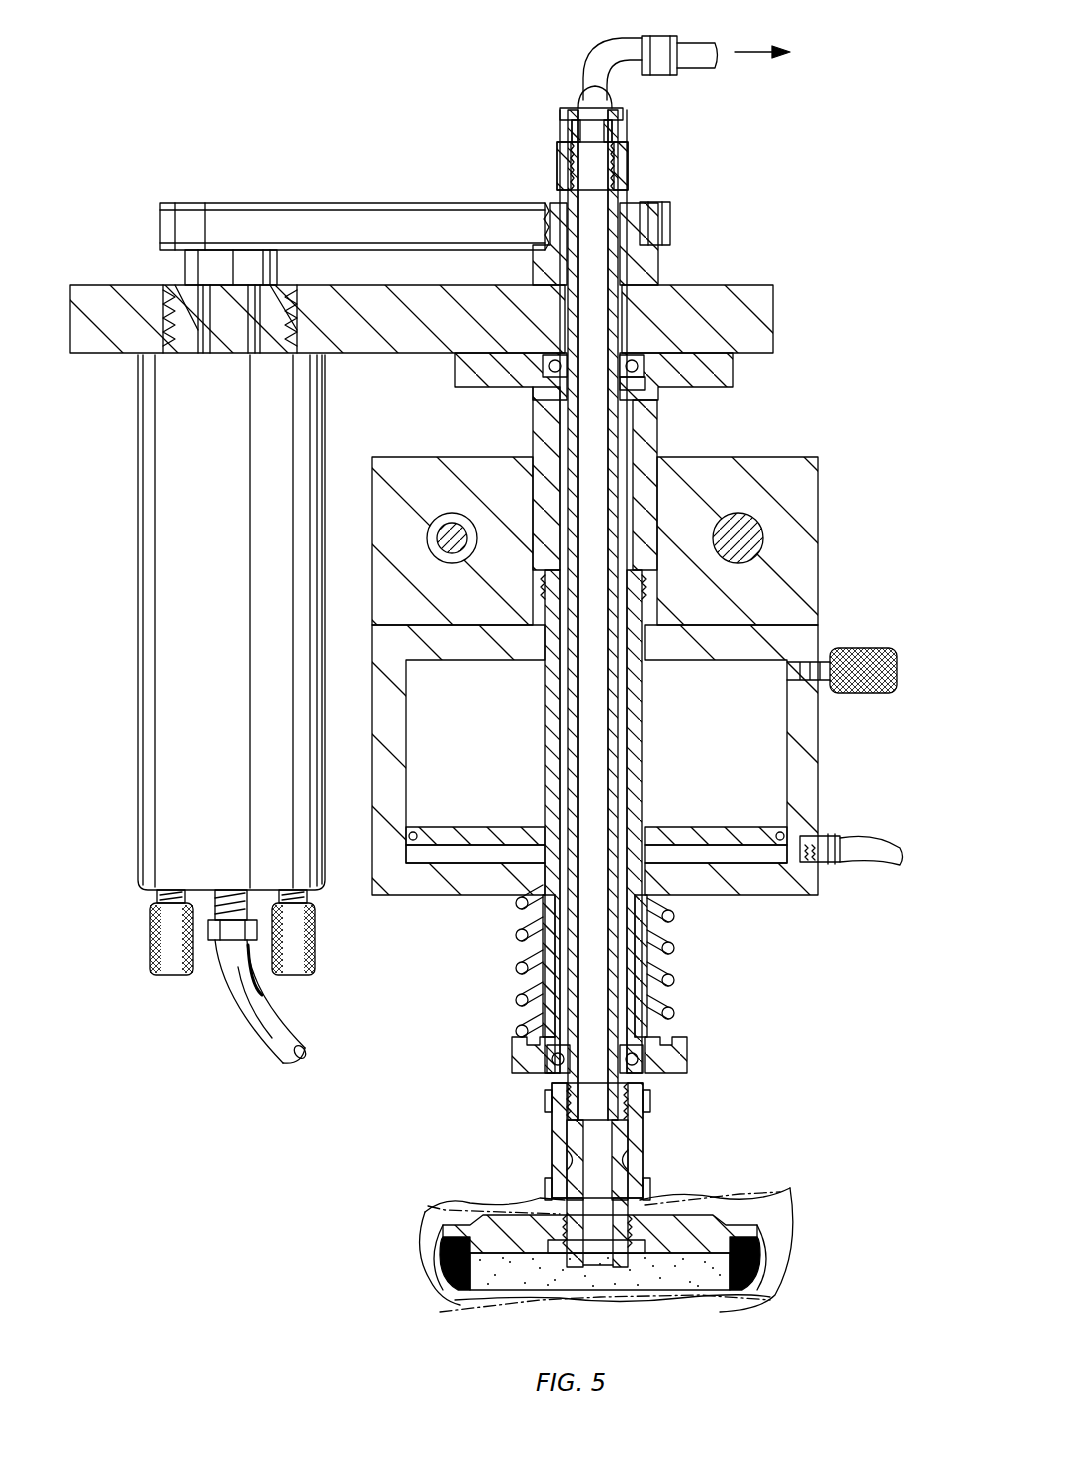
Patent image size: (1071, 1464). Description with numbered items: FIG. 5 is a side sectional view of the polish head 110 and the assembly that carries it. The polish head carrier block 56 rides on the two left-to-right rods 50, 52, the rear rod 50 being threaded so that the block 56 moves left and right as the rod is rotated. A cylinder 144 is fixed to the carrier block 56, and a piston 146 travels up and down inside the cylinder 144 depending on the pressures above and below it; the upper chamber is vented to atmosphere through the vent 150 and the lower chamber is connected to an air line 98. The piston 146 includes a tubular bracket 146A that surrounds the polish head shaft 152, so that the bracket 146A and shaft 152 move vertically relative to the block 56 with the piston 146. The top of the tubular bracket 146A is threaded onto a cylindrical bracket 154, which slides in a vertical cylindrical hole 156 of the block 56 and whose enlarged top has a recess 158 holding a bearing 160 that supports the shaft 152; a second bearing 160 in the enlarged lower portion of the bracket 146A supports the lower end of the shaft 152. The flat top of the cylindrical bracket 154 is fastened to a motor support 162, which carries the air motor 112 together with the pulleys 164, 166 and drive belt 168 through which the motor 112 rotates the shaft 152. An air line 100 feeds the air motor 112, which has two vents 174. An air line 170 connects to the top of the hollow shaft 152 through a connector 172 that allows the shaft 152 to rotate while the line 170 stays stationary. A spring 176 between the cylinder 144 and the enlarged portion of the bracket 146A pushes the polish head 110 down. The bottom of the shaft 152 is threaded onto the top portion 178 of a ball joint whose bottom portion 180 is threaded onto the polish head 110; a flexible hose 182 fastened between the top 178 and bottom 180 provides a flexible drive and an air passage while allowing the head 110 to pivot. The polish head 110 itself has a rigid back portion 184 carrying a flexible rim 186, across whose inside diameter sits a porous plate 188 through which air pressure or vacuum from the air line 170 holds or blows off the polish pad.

The rear left-to-right rod 50 is at (440, 520).
The left-to-right rod 52 is at (750, 542).
The polish head carrier block 56 is at (806, 500).
The air line 98 is at (875, 868).
The air line 100 is at (258, 1045).
The polish head 110 is at (760, 1175).
The air motor 112 is at (155, 490).
The cylinder 144 is at (848, 750).
The piston 146 is at (728, 830).
The tubular bracket 146A is at (648, 712).
The vent 150 is at (880, 648).
The polish head shaft 152 is at (567, 725).
The cylindrical bracket 154 is at (655, 430).
The vertical cylindrical hole 156 is at (655, 455).
The recess 158 is at (700, 408).
The bearing 160 is at (642, 378).
The motor support 162 is at (773, 320).
The pulley 164 is at (653, 200).
The pulley 166 is at (242, 198).
The drive belt 168 is at (418, 205).
The air line 170 is at (590, 70).
The connector 172 is at (548, 98).
The vent 174 is at (180, 980).
The spring 176 is at (652, 980).
The top portion of ball joint 178 is at (615, 1122).
The bottom portion of ball joint 180 is at (630, 1172).
The flexible hose 182 is at (555, 1152).
The rigid back portion 184 is at (700, 1217).
The flexible rim 186 is at (745, 1268).
The porous plate 188 is at (688, 1292).